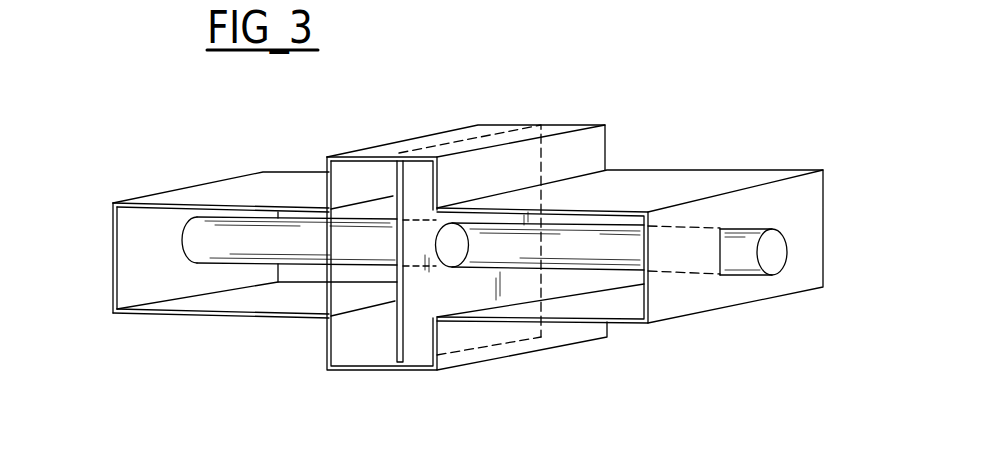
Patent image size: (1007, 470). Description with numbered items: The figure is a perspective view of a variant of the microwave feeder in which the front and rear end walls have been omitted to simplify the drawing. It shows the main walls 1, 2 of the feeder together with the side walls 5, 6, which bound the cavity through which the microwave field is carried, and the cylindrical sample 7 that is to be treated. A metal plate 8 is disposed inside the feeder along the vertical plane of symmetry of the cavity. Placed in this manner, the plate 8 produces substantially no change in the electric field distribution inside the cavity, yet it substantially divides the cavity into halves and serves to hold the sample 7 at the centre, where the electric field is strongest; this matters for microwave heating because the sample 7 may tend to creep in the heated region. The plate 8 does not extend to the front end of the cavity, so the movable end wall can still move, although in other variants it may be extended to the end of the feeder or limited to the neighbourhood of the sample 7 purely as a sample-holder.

The main wall 1 is at (499, 86).
The main wall 2 is at (489, 369).
The side wall 5 is at (702, 297).
The side wall 6 is at (142, 274).
The cylindrical sample 7 is at (773, 256).
The metal plate 8 is at (411, 332).